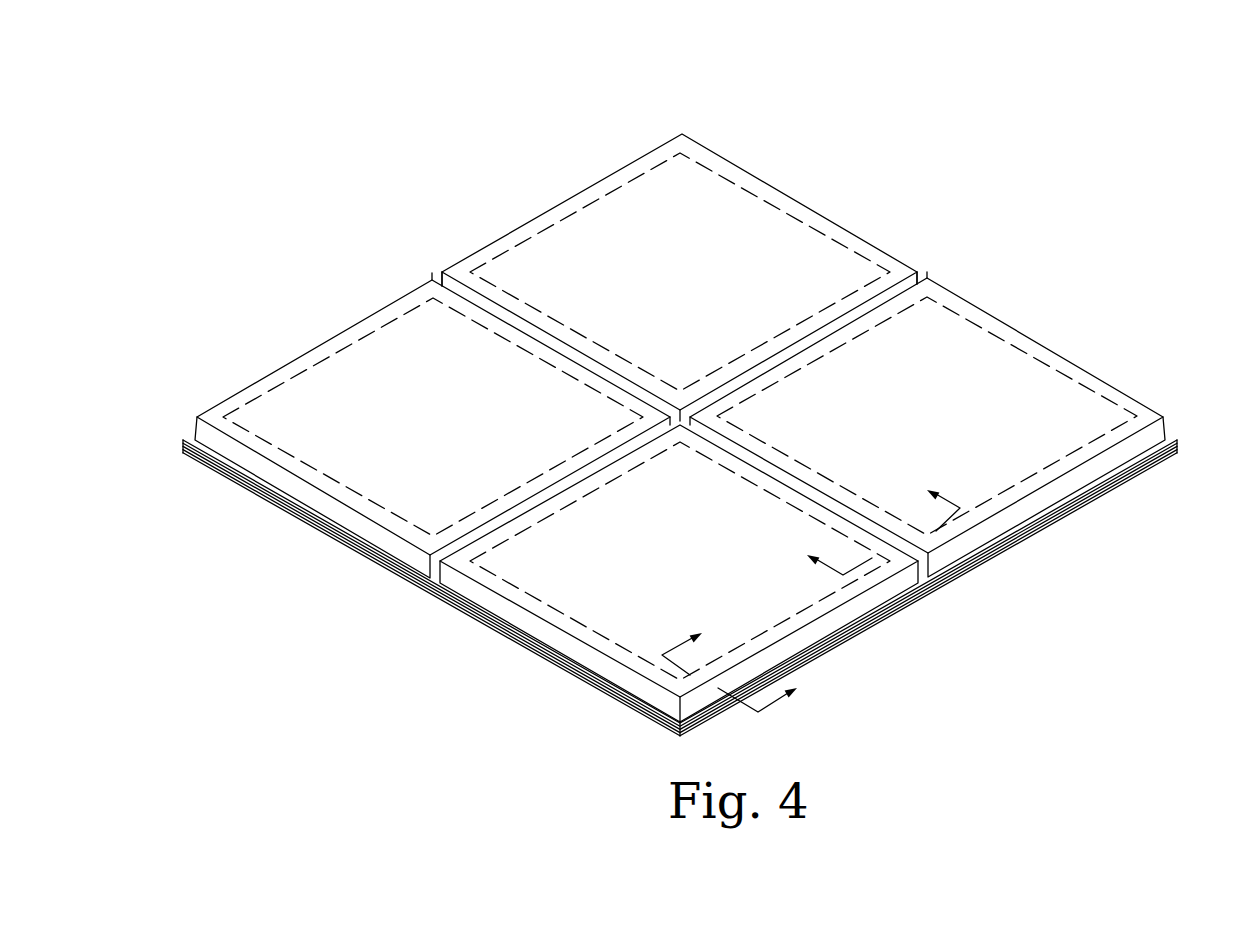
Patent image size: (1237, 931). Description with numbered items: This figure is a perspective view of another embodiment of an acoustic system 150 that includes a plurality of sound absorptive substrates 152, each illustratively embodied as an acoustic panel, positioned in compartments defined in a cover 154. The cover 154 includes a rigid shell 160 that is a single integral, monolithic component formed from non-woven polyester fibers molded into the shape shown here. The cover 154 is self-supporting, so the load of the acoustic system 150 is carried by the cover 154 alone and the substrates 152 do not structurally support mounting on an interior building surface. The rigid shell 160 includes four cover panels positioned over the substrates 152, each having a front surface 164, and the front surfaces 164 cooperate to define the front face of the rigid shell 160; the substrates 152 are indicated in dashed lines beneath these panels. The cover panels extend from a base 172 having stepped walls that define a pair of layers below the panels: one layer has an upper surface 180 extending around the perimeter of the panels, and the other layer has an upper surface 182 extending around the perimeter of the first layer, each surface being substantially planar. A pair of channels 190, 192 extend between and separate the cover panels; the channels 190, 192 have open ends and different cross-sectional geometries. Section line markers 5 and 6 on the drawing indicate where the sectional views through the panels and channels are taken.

The acoustic system 150 is at (886, 129).
The sound absorptive substrate 152 is at (853, 243).
The cover 154 is at (467, 188).
The rigid shell 160 is at (447, 603).
The front surface 164 is at (682, 140).
The base 172 is at (1172, 458).
The upper surface 180 is at (960, 575).
The upper surface 182 is at (1020, 546).
The channel 190 is at (424, 261).
The channel 192 is at (948, 266).
The section line 5- 5 is at (737, 664).
The section line 6- 6 is at (874, 525).